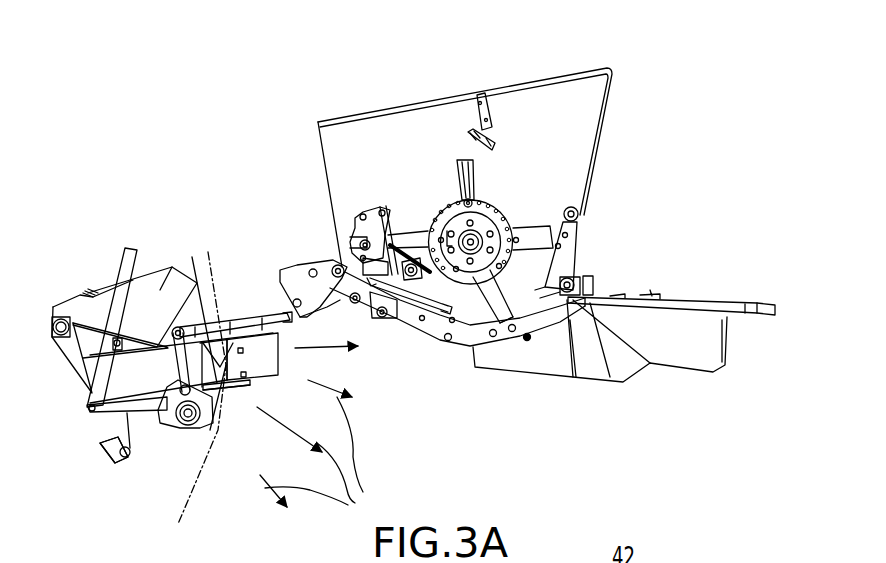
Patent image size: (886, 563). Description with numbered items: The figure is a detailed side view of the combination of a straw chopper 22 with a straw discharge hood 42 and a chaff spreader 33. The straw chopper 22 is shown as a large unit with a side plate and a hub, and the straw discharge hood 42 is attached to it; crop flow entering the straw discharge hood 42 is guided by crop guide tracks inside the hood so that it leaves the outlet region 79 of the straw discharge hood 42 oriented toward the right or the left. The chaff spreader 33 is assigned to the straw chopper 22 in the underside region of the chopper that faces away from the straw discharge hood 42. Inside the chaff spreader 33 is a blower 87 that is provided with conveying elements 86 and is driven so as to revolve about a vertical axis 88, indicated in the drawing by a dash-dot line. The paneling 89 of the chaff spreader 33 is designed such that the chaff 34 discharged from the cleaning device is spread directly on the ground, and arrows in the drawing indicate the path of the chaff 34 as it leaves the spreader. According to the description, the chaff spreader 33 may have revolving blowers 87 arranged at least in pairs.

The straw chopper 22 is at (486, 78).
The chaff spreader 33 is at (225, 268).
The chaff 34 is at (314, 432).
The straw discharge hood 42 is at (682, 283).
The outlet region 79 is at (738, 355).
The conveying elements 86 is at (258, 362).
The blower 87 is at (236, 397).
The vertical axis 88 is at (187, 454).
The paneling 89 is at (160, 420).